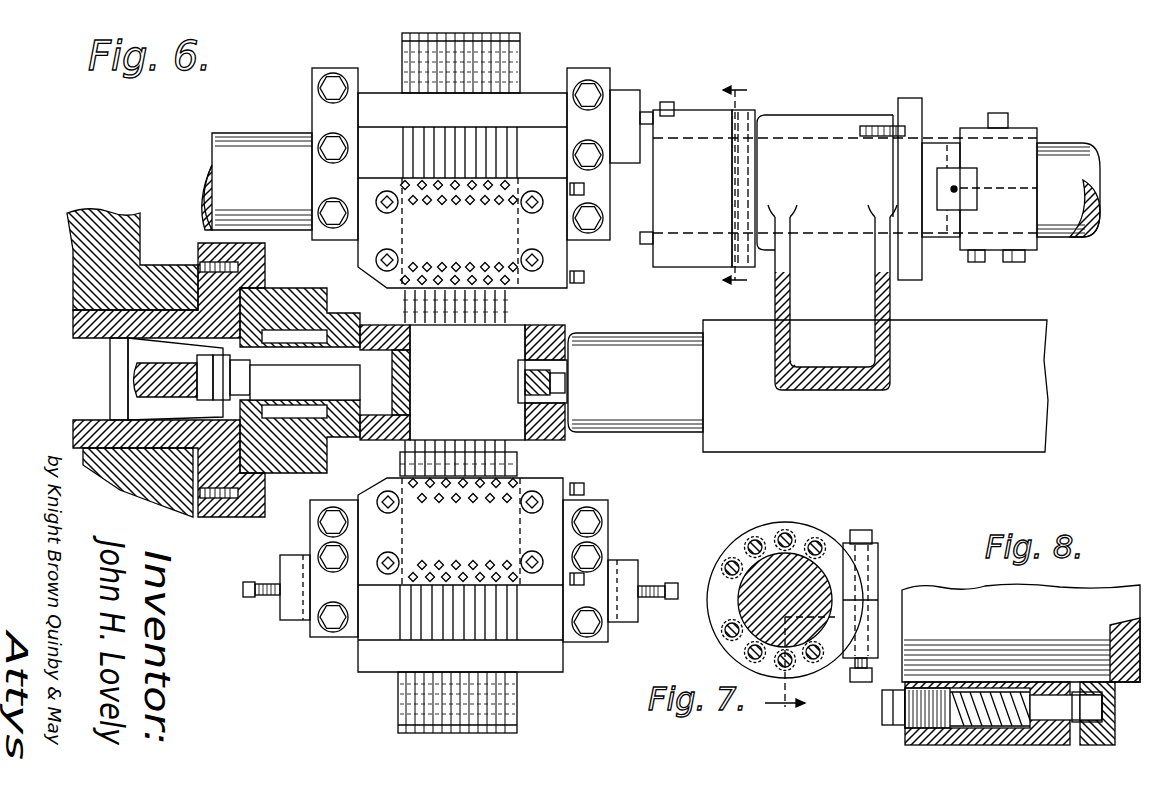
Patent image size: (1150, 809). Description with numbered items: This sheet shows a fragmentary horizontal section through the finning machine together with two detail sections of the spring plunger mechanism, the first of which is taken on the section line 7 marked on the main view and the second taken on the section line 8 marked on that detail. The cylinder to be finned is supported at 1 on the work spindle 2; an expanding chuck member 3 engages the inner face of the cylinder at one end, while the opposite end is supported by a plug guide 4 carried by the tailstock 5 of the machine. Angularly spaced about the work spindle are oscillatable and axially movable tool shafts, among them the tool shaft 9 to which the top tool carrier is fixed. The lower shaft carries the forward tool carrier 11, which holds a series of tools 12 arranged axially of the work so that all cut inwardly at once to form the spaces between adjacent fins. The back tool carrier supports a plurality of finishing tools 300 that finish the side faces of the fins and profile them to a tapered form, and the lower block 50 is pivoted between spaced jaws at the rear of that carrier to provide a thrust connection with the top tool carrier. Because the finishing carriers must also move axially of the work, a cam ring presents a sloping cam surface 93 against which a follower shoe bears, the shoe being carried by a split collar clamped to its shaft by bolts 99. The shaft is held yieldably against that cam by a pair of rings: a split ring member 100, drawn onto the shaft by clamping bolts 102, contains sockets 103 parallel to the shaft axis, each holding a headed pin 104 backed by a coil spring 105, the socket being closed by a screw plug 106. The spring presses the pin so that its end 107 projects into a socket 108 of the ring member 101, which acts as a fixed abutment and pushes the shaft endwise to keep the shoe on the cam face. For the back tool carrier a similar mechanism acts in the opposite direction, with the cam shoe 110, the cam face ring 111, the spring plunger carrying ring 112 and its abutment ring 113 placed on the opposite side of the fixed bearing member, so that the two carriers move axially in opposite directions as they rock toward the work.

In FIG. 6, the cylinder support 1 is at (548, 297).
In FIG. 6, the work spindle 2 is at (278, 310).
In FIG. 6, the expanding chuck member 3 is at (467, 382).
In FIG. 6, the plug guide 4 is at (566, 333).
In FIG. 6, the tailstock 5 is at (643, 340).
In FIG. 6, the section line 7- 7 is at (735, 187).
In FIG. 7, the tool shaft 8 is at (802, 673).
In FIG. 6, the tool shaft 9 is at (1063, 160).
In FIG. 8, the tool shaft 9 is at (956, 608).
In FIG. 6, the forward tool carrier 11 is at (460, 605).
In FIG. 6, the tools 12 is at (483, 450).
In FIG. 6, the lower block 50 is at (461, 160).
In FIG. 6, the sloping cam surface 93 is at (935, 202).
In FIG. 6, the bolts 99 is at (1014, 263).
In FIG. 7, the ring member 100 is at (724, 560).
In FIG. 8, the ring member 100 is at (932, 735).
In FIG. 8, the ring member 101 is at (1100, 737).
In FIG. 7, the clamping bolts 102 is at (880, 552).
In FIG. 7, the sockets 103 is at (740, 555).
In FIG. 7, the headed pin 104 is at (816, 540).
In FIG. 8, the headed pin 104 is at (1047, 715).
In FIG. 8, the coil spring 105 is at (986, 722).
In FIG. 8, the screw plug 106 is at (895, 727).
In FIG. 8, the pin end 107 is at (1083, 698).
In FIG. 8, the socket 108 is at (1108, 705).
In FIG. 6, the cam shoe 110 is at (930, 185).
In FIG. 6, the cam face ring 111 is at (904, 110).
In FIG. 6, the spring plunger carrying ring 112 is at (690, 122).
In FIG. 6, the abutment ring 113 is at (745, 116).
In FIG. 6, the finishing tools 300 is at (405, 299).